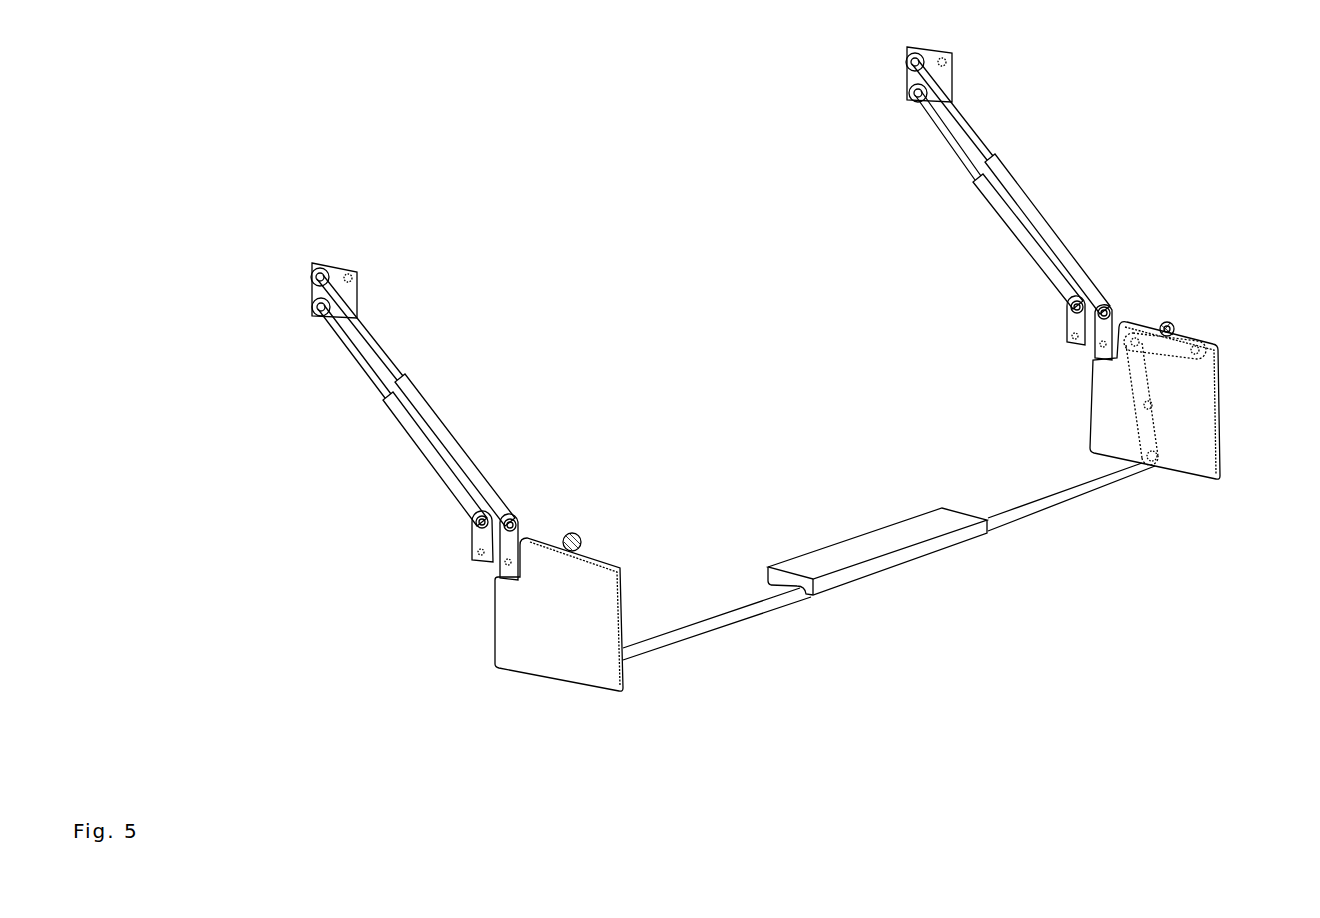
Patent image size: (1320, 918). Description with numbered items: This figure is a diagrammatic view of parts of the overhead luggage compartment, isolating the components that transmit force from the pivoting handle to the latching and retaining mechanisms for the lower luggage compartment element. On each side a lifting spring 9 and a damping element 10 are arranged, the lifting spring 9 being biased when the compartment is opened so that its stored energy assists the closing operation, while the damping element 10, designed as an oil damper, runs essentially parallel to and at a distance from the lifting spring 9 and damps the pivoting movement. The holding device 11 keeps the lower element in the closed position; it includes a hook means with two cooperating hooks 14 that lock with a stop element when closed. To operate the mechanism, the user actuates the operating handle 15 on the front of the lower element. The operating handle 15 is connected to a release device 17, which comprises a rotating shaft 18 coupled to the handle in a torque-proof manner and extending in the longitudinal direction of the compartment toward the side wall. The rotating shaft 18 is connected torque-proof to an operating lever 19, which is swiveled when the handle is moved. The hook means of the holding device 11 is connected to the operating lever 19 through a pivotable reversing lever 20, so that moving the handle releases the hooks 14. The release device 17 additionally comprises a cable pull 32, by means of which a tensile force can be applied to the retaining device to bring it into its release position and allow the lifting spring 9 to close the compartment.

The lifting spring 9 is at (410, 397).
The damping element 10 is at (410, 424).
The holding device 11 is at (580, 522).
The hooks 14 is at (1180, 326).
The operating handle 15 is at (897, 570).
The release device 17 is at (697, 612).
The rotating shaft 18 is at (1045, 500).
The operating lever 19 is at (1153, 430).
The reversing lever 20 is at (1142, 380).
The cable pull 32 is at (498, 553).